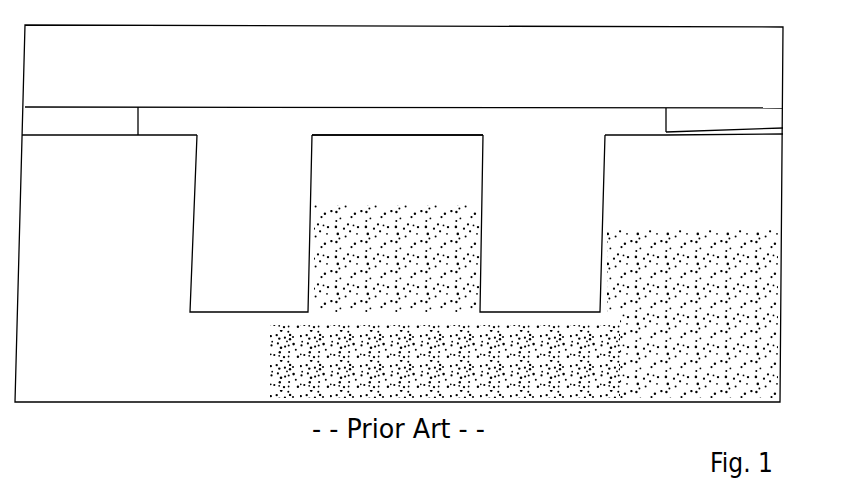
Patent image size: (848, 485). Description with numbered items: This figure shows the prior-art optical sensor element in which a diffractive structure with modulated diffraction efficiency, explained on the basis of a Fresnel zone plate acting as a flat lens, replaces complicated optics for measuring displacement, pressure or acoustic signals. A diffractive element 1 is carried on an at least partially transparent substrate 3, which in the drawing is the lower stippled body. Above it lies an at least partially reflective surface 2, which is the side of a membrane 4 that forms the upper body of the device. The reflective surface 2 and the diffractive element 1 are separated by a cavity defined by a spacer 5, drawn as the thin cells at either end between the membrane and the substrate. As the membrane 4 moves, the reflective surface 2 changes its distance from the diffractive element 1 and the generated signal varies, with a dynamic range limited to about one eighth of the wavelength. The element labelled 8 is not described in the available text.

The diffractive element 1 is at (400, 137).
The reflective surface 2 is at (408, 104).
The substrate 3 is at (484, 266).
The membrane 4 is at (404, 82).
The spacer 5 is at (797, 122).
The gap 8 is at (782, 133).